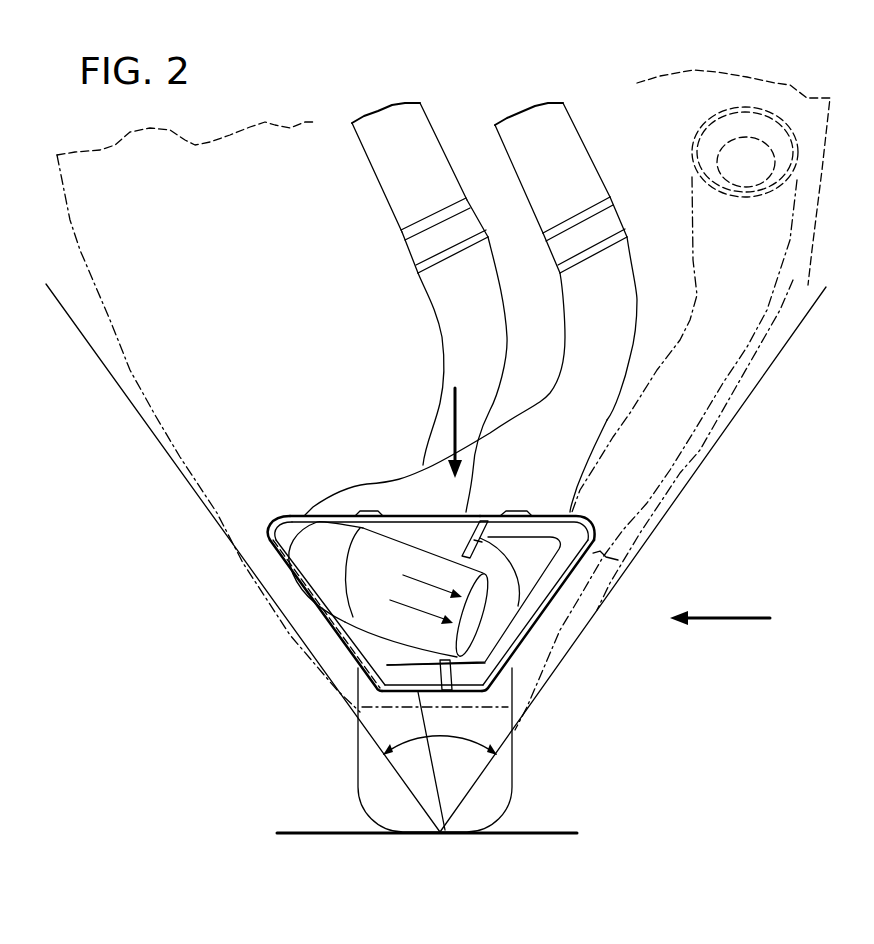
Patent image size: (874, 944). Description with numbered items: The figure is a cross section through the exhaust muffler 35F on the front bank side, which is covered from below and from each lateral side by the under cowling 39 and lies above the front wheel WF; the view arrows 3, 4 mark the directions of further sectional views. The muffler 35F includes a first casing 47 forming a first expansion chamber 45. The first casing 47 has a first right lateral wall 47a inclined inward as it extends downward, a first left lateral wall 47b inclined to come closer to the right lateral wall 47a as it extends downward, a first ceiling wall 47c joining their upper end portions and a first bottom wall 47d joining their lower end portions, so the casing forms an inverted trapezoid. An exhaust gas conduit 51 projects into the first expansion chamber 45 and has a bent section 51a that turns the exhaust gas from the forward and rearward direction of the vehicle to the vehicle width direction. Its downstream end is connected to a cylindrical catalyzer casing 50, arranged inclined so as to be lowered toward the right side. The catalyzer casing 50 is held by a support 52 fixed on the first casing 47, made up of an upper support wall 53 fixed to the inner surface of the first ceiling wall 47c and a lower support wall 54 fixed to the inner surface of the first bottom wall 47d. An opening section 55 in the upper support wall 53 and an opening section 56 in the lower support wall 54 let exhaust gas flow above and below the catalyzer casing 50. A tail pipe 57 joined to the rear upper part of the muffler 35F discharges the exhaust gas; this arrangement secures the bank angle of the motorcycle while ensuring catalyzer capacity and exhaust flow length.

The view direction arrow of FIG. 3 is at (743, 624).
The view direction arrow of FIG. 4 is at (457, 414).
The exhaust muffler on the front bank side 35F is at (590, 302).
The under cowling 39 is at (545, 662).
The first expansion chamber 45 is at (537, 571).
The first casing 47 is at (447, 513).
The first right lateral wall 47a is at (553, 605).
The first left lateral wall 47b is at (328, 632).
The first ceiling wall 47c is at (481, 520).
The first bottom wall 47d is at (430, 707).
The catalyzer casing 50 is at (383, 618).
The exhaust gas conduit 51 is at (285, 536).
The bent section 51a is at (297, 570).
The support 52 is at (464, 538).
The upper support wall 53 is at (583, 514).
The lower support wall 54 is at (480, 689).
The opening section 55 is at (448, 573).
The opening section 56 is at (462, 665).
The tail pipe 57 is at (690, 240).
The front wheel WF is at (375, 797).